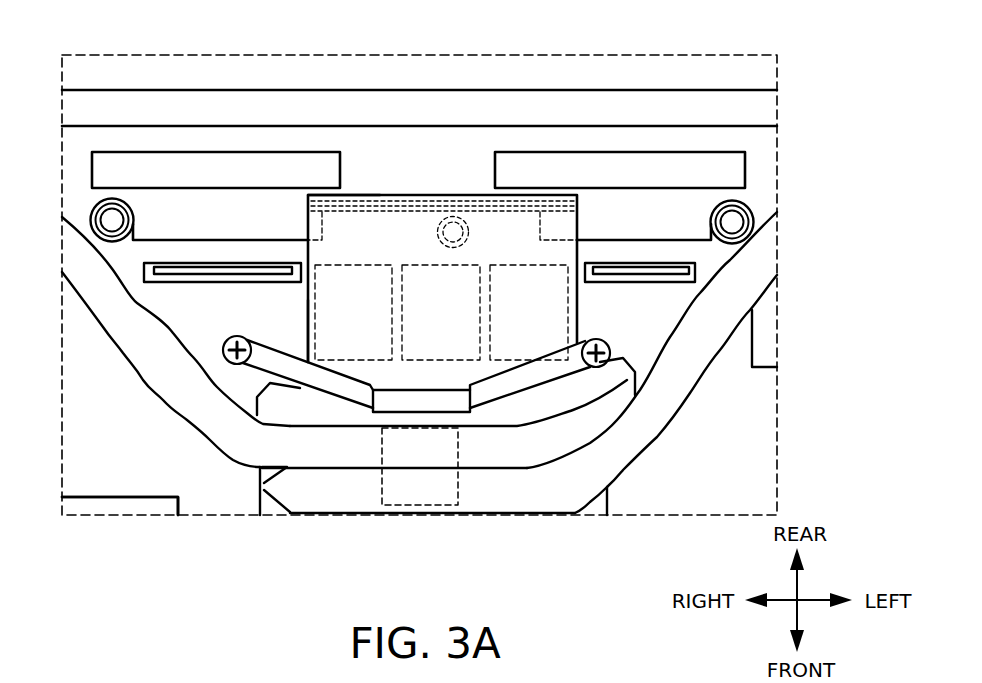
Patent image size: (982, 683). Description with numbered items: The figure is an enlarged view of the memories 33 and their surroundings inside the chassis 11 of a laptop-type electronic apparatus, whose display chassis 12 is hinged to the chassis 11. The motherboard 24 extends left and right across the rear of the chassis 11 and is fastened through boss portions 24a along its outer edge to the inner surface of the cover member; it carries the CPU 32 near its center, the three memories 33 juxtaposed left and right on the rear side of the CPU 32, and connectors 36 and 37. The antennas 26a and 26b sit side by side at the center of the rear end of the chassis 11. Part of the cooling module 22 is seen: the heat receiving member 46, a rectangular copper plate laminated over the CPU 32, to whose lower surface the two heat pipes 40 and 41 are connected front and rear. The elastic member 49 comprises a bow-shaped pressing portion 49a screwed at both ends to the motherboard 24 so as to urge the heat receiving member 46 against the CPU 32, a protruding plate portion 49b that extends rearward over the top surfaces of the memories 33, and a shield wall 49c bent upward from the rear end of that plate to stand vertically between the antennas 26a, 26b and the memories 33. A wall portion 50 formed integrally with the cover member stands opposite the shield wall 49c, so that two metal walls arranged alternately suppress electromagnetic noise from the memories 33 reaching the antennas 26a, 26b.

The chassis 11 is at (70, 37).
The display chassis 12 is at (692, 86).
The cooling module 22 is at (220, 482).
The motherboard 24 is at (683, 474).
The boss portion 24a is at (445, 205).
The antenna 26a is at (186, 165).
The antenna 26b is at (578, 172).
The CPU 32 is at (458, 484).
The memories 33 is at (520, 287).
The connector 36 is at (145, 271).
The connector 37 is at (697, 275).
The heat pipe 40 is at (128, 330).
The heat pipe 41 is at (718, 320).
The heat receiving member 46 is at (590, 506).
The elastic member 49 is at (348, 396).
The pressing portion 49a is at (537, 372).
The protruding plate portion 49b is at (345, 307).
The shield wall 49c is at (363, 195).
The wall portion 50 is at (445, 215).